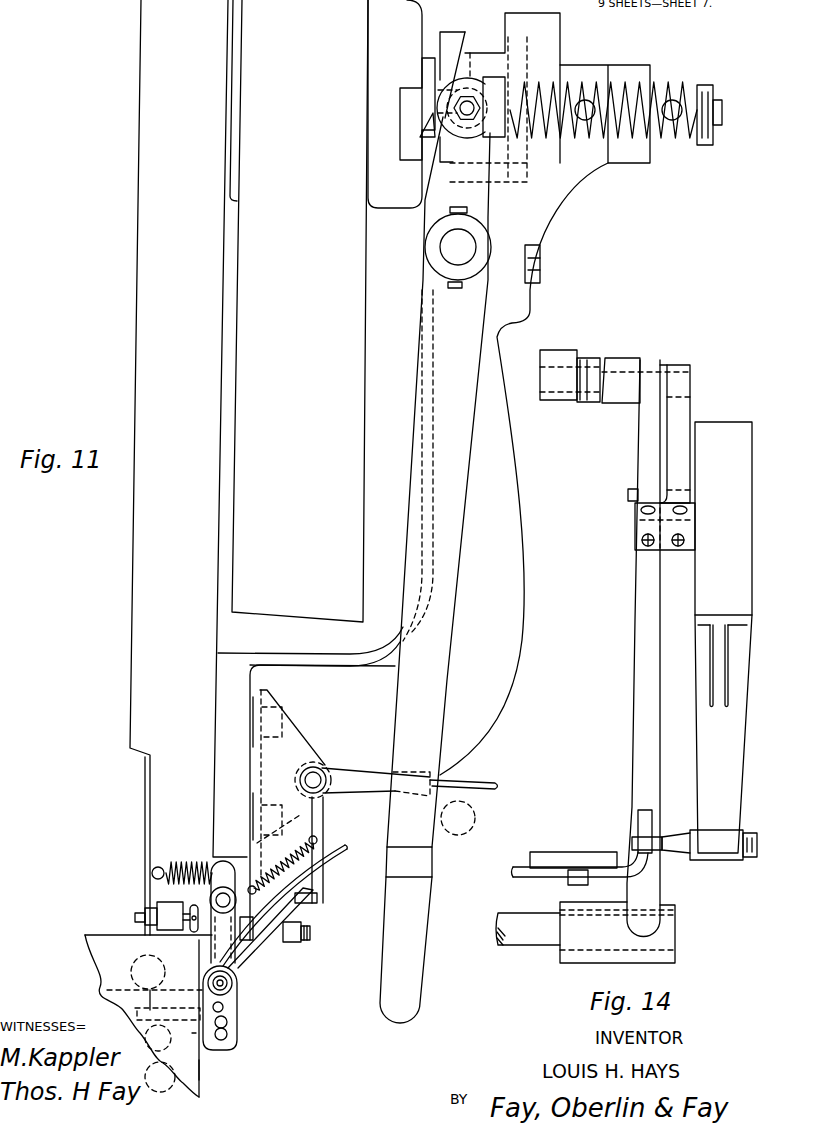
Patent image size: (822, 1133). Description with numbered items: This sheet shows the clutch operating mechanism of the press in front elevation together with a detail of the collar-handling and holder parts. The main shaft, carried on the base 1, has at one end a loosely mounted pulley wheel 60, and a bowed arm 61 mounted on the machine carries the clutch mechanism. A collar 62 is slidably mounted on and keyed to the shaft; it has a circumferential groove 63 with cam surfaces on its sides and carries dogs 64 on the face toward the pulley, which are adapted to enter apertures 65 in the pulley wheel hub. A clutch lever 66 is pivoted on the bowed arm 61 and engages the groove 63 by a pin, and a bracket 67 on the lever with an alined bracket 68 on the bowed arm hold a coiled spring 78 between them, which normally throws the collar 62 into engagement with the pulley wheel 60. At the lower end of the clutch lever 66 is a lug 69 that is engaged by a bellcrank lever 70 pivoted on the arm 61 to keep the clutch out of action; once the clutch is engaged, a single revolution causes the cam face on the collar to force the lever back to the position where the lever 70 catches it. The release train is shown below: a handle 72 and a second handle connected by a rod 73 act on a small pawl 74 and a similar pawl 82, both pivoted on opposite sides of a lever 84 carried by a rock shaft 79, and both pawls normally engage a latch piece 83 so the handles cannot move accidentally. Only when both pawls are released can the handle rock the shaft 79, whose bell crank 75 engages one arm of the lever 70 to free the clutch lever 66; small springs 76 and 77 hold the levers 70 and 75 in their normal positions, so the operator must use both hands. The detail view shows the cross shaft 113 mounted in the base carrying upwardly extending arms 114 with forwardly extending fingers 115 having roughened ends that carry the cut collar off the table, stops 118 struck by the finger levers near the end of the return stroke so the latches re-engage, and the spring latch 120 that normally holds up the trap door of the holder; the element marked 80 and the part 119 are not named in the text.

In FIG. 11, the base 1 is at (205, 1068).
In FIG. 11, the pulley wheel 60 is at (300, 311).
In FIG. 11, the bowed arm 61 is at (510, 657).
In FIG. 11, the collar 62 is at (452, 33).
In FIG. 11, the circumferential groove 63 is at (462, 48).
In FIG. 11, the dogs 64 is at (432, 113).
In FIG. 11, the apertures 65 is at (398, 112).
In FIG. 11, the clutch lever 66 is at (447, 594).
In FIG. 11, the bracket 67 is at (490, 83).
In FIG. 11, the bracket 68 is at (705, 97).
In FIG. 11, the lug 69 is at (417, 797).
In FIG. 11, the bellcrank lever 70 is at (368, 768).
In FIG. 11, the handle 72 is at (340, 855).
In FIG. 11, the rod 73 is at (164, 945).
In FIG. 11, the pawl 74 is at (236, 1049).
In FIG. 11, the bell crank 75 is at (284, 948).
In FIG. 11, the spring 76 is at (281, 867).
In FIG. 11, the spring 77 is at (183, 862).
In FIG. 11, the coiled spring 78 is at (653, 88).
In FIG. 11, the rock shaft 79 is at (240, 991).
In FIG. 11, the hole 80 is at (192, 1033).
In FIG. 11, the pawl 82 is at (192, 1035).
In FIG. 11, the latch piece 83 is at (183, 1033).
In FIG. 11, the lever 84 is at (238, 1003).
In FIG. 14, the cross shaft 113 is at (527, 933).
In FIG. 14, the arms 114 is at (645, 737).
In FIG. 14, the fingers 115 is at (565, 358).
In FIG. 14, the stops 118 is at (645, 525).
In FIG. 14, the handle block 119 is at (694, 641).
In FIG. 14, the spring latch 120 is at (543, 872).